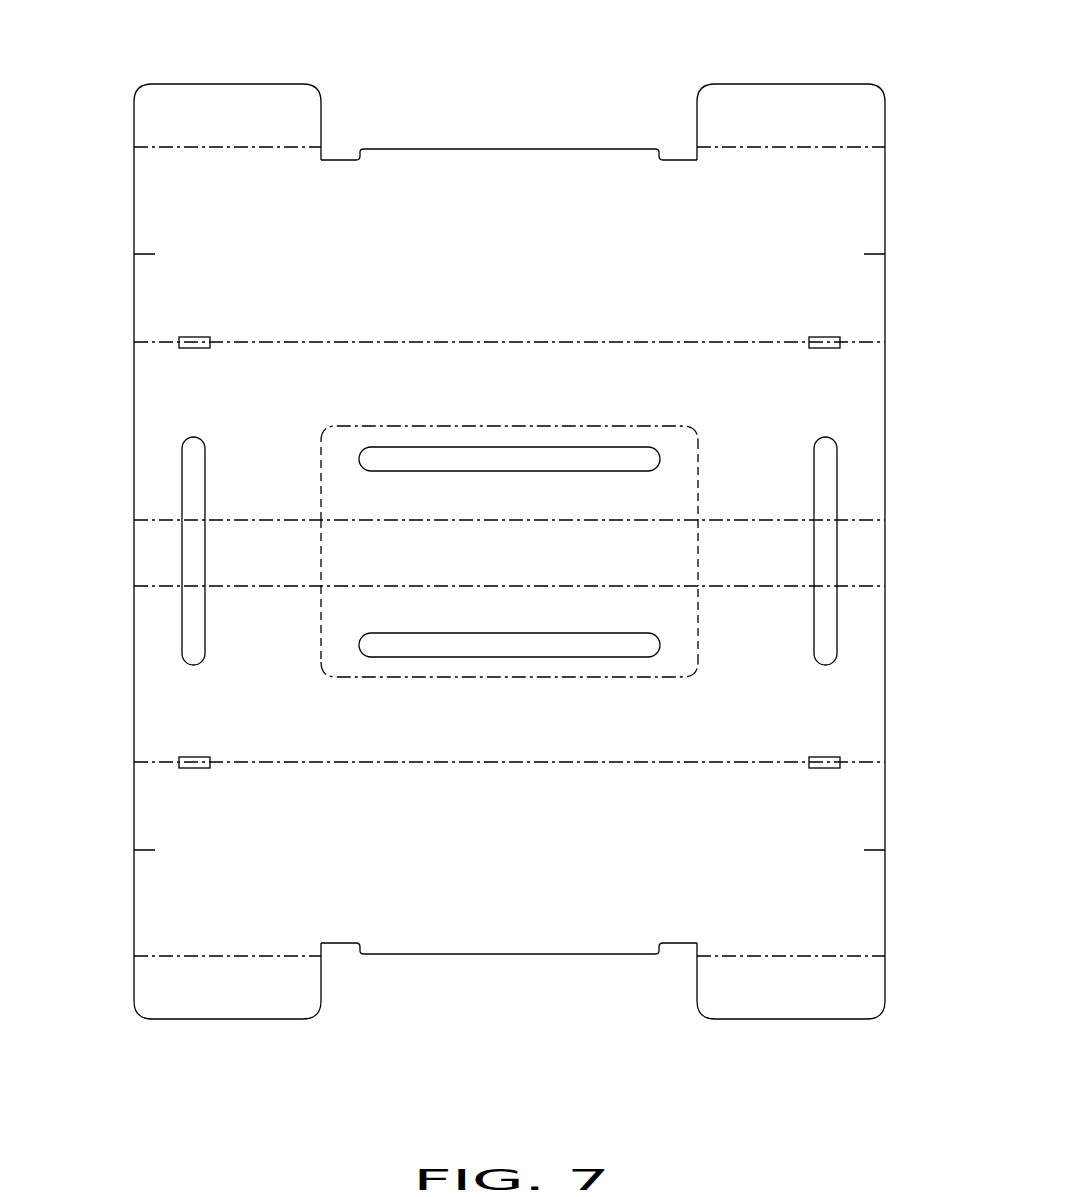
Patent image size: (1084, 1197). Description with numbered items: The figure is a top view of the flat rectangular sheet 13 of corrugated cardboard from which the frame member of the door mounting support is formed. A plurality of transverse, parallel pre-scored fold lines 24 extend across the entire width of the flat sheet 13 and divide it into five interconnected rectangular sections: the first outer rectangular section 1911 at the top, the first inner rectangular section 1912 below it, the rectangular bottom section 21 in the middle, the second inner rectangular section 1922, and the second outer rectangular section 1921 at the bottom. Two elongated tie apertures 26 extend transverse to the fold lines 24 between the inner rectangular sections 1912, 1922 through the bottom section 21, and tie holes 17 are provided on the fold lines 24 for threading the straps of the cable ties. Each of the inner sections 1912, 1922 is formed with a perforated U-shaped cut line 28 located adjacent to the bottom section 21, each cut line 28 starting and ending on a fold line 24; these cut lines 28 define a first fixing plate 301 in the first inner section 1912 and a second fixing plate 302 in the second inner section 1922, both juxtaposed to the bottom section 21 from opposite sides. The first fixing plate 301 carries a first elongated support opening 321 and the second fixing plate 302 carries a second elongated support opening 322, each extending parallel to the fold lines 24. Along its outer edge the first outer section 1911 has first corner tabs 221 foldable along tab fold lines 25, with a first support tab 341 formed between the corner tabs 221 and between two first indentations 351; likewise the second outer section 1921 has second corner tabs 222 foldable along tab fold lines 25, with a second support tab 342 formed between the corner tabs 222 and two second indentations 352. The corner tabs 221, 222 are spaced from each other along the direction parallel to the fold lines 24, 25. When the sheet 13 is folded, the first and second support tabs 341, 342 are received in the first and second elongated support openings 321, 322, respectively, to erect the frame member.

The flat rectangular sheet 13 is at (903, 273).
The tie holes 17 is at (196, 337).
The first outer rectangular section 1911 is at (509, 251).
The first inner rectangular section 1912 is at (463, 431).
The second outer rectangular section 1921 is at (509, 852).
The second inner rectangular section 1922 is at (463, 674).
The bottom section 21 is at (147, 548).
The first corner tabs 221 is at (509, 94).
The second corner tabs 222 is at (509, 1014).
The fold lines 24 is at (862, 343).
The tab fold lines 25 is at (227, 150).
The elongated tie apertures 26 is at (192, 647).
The U-shaped cut line 28 is at (537, 426).
The first fixing plate 301 is at (512, 445).
The second fixing plate 302 is at (512, 664).
The first elongated support opening 321 is at (509, 421).
The second elongated support opening 322 is at (509, 687).
The first support tab 341 is at (509, 119).
The second support tab 342 is at (509, 989).
The first indentations 351 is at (509, 124).
The second indentations 352 is at (509, 984).